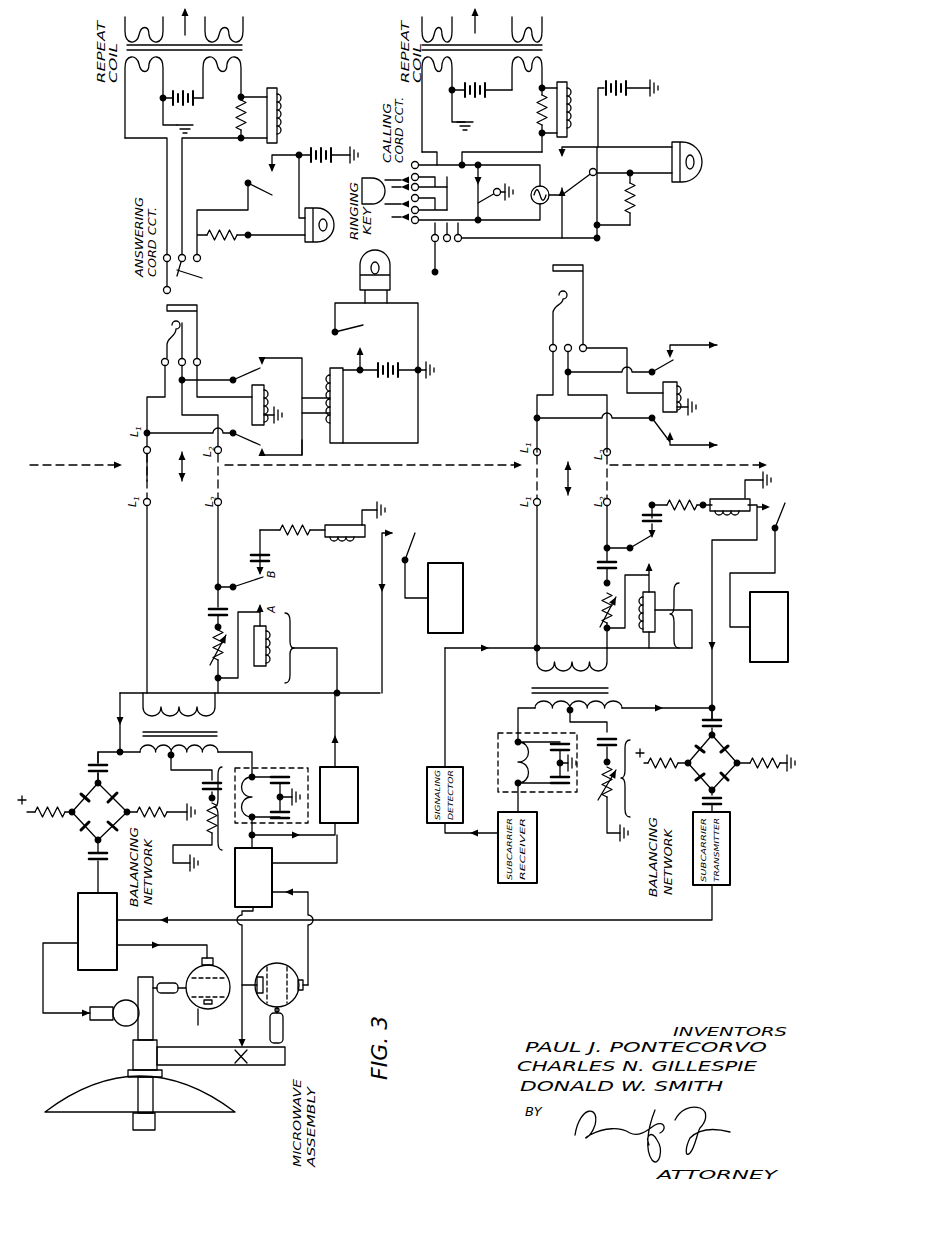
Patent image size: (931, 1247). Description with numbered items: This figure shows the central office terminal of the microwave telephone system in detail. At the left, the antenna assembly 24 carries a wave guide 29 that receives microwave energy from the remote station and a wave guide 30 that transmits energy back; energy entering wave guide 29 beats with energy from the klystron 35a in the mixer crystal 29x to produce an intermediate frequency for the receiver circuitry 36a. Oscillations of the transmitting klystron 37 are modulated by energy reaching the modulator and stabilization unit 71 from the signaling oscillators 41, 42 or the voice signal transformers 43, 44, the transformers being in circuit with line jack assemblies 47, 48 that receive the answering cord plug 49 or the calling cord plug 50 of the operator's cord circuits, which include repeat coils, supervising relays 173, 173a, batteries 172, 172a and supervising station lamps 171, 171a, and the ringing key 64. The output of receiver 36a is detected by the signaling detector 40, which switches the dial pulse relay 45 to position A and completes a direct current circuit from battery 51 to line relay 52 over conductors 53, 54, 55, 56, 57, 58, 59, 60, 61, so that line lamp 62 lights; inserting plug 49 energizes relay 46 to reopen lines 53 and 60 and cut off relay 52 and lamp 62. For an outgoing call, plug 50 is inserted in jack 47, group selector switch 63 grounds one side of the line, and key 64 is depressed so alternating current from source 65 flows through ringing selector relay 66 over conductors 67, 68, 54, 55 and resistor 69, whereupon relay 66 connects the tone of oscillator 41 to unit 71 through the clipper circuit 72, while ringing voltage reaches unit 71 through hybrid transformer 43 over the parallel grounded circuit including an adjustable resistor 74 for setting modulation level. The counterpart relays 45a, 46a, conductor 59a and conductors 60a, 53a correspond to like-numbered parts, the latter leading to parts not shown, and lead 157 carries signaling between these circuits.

The antenna assembly 24 is at (72, 1088).
The wave guide 29 is at (217, 1064).
The mixer crystal 29x is at (246, 1065).
The wave guide 30 is at (136, 1030).
The klystron 35a is at (293, 1002).
The receiver circuitry 36a is at (275, 865).
The klystron 37 is at (214, 964).
The signaling detector 40 is at (358, 785).
The signaling oscillator 41 is at (448, 563).
The signaling oscillator 42 is at (755, 664).
The hybrid transformer 43 is at (217, 733).
The voice signal transformer 44 is at (532, 688).
The dial pulse relay 45 is at (267, 648).
The dial pulse relay 45a is at (649, 605).
The relay 46 is at (267, 399).
The relay 46a is at (680, 384).
The line jack assembly 47 is at (162, 335).
The line jack assembly 48 is at (548, 303).
The answering cord plug 49 is at (203, 277).
The calling cord plug 50 is at (434, 250).
The battery 51 is at (399, 363).
The line relay 52 is at (345, 405).
The conductor 53 is at (269, 358).
The conductor 53a is at (715, 341).
The conductor 54 is at (216, 549).
The conductor 55 is at (221, 585).
The conductor 56 is at (260, 665).
The conductor 57 is at (180, 700).
The conductor 58 is at (145, 642).
The conductor 59 is at (184, 433).
The conductor 59a is at (626, 418).
The conductor 60 is at (310, 437).
The conductor 60a is at (715, 443).
The conductor 61 is at (418, 403).
The line lamp 62 is at (393, 268).
The group selector switch 63 is at (495, 186).
The ringing key 64 is at (370, 174).
The A.C. source 65 is at (532, 200).
The ringing selector relay 66 is at (340, 540).
The conductor 67 is at (423, 162).
The conductor 68 is at (450, 200).
The resistor 69 is at (282, 527).
The modulator and stabilization unit 71 is at (78, 900).
The clipper circuit 72 is at (106, 805).
The adjustable resistor 74 is at (210, 647).
The signaling lead 157 is at (310, 648).
The supervising station lamp 171 is at (320, 242).
The supervising station lamp 171a is at (680, 182).
The battery 172 is at (318, 144).
The battery 172a is at (622, 84).
The supervising relay 173 is at (269, 89).
The supervising relay 173a is at (560, 80).